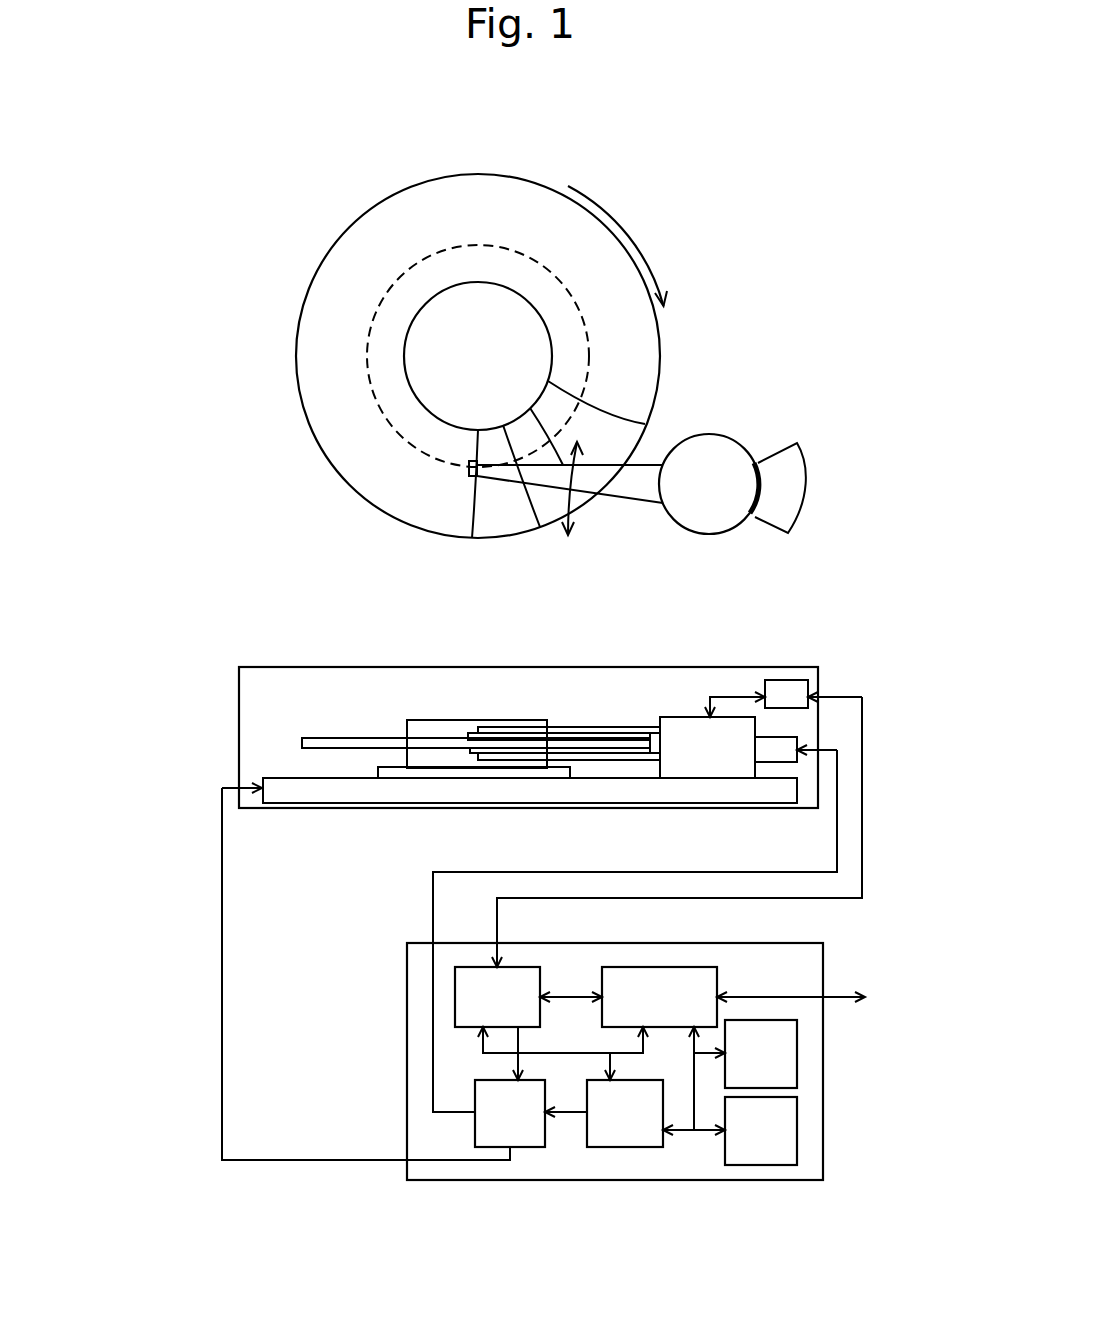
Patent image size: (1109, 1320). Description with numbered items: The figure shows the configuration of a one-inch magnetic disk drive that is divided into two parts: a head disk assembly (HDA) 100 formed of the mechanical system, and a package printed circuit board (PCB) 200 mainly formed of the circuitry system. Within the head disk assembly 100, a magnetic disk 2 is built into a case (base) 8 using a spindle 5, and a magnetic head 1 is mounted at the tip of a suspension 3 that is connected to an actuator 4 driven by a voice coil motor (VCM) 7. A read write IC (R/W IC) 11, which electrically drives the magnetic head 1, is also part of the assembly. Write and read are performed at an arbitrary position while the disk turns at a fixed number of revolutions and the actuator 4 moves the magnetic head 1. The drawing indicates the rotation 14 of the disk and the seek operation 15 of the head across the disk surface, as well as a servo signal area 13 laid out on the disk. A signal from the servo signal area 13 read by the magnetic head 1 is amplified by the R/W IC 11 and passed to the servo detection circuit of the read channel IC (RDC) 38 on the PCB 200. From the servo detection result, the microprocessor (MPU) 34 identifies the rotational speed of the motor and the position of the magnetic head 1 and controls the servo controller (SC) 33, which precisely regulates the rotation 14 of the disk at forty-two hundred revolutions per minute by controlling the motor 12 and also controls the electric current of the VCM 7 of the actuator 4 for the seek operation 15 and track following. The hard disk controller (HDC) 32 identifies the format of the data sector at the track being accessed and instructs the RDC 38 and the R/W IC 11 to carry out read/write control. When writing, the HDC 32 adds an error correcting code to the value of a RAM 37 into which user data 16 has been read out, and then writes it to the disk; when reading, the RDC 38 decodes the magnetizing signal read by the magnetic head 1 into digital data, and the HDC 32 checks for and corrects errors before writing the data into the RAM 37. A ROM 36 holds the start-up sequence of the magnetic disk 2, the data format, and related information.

The magnetic head 1 is at (469, 466).
The magnetic disk 2 is at (382, 488).
The suspension 3 is at (642, 478).
The actuator 4 is at (718, 533).
The spindle 5 is at (440, 757).
The voice coil motor (VCM) 7 is at (775, 738).
The case (base) 8 is at (283, 793).
The read write IC (R/W IC) 11 is at (800, 680).
The motor 12 is at (535, 773).
The servo signal area 13 is at (600, 410).
The rotation of the disk 14 is at (647, 257).
The seek operation 15 is at (578, 503).
The user data 16 is at (813, 982).
The hard disk controller (HDC) 32 is at (677, 967).
The servo controller (SC) 33 is at (527, 1147).
The microprocessor (MPU) 34 is at (622, 1147).
The ROM 36 is at (797, 1130).
The RAM 37 is at (797, 1053).
The read channel IC (RDC) 38 is at (515, 967).
The head disk assembly (HDA) 100 is at (238, 705).
The package printed circuit board (PCB) 200 is at (405, 993).